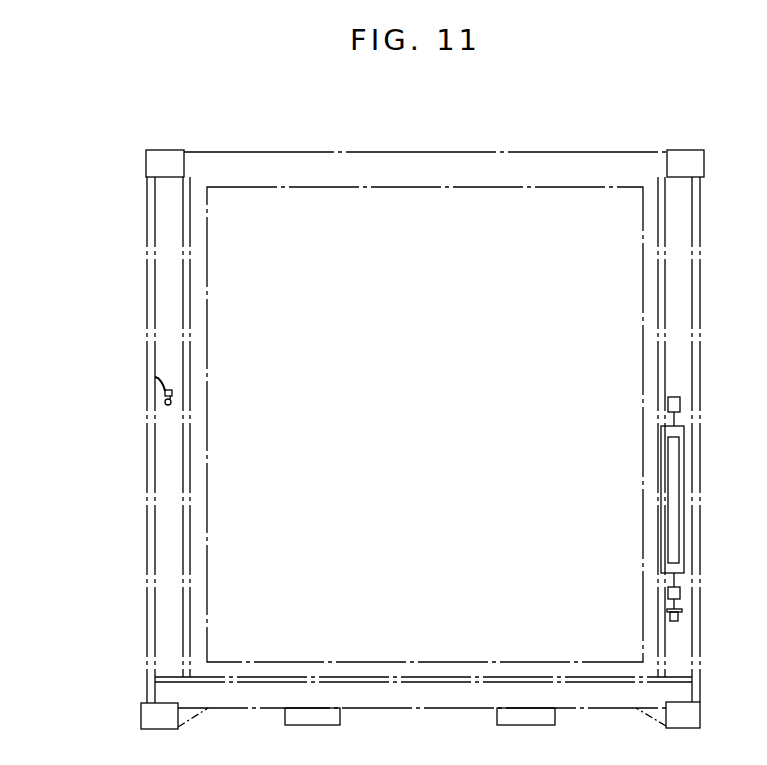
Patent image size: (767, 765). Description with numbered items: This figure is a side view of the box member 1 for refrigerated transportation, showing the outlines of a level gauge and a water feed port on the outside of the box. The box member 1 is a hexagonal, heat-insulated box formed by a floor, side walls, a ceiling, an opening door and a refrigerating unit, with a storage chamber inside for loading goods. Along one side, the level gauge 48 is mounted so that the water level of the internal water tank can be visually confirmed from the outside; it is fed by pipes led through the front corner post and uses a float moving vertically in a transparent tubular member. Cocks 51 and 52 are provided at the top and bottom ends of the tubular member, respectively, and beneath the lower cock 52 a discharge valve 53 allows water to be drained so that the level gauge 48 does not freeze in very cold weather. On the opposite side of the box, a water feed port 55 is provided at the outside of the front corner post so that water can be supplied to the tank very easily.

The box member 1 is at (521, 150).
The level gauge 48 is at (675, 491).
The cock 51 is at (682, 402).
The cock 52 is at (681, 594).
The discharge valve 53 is at (682, 614).
The water feed port 55 is at (166, 404).